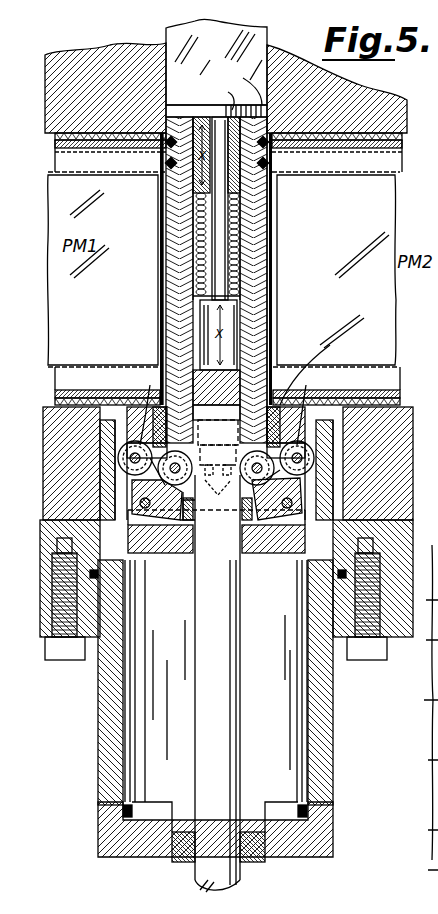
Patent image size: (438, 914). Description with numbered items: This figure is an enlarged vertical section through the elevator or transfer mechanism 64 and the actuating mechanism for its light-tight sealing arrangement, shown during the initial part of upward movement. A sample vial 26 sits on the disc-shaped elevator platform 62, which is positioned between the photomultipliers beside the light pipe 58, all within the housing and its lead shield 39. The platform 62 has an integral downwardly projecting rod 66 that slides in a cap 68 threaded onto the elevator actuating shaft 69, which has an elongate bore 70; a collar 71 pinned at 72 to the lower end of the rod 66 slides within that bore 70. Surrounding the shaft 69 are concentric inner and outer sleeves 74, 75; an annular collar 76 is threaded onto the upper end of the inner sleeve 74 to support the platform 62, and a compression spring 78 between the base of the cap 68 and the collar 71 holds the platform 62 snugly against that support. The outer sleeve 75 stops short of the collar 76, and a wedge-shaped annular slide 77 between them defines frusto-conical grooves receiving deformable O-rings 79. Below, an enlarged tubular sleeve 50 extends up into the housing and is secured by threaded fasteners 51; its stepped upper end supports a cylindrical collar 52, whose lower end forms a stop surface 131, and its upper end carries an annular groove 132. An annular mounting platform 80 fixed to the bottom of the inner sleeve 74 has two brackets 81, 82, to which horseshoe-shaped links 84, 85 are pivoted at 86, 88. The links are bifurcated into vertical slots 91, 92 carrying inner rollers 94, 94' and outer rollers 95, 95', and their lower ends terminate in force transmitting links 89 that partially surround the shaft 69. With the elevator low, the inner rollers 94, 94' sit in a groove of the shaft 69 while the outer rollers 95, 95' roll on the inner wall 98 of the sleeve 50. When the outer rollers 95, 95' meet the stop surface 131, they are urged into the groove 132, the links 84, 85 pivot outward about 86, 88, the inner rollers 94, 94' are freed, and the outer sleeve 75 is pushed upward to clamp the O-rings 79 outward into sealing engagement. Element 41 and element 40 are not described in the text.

The sample vial 26 is at (254, 42).
The lead shield 39 is at (383, 108).
The gasket 41 is at (402, 142).
The wedge-shaped annular slide 77 is at (303, 160).
The light pipe 58 is at (272, 218).
The outer roller 95 is at (107, 386).
The outer roller 95' is at (336, 386).
The slot 91 is at (140, 406).
The slot 92 is at (298, 405).
The collar 52 is at (340, 362).
The lower housing 40 is at (404, 405).
The outer sleeve 75 is at (262, 300).
The inner sleeve 74 is at (250, 272).
The cap 68 is at (198, 190).
The pin 72 is at (205, 290).
The collar 71 is at (200, 296).
The downwardly projecting rod 66 is at (215, 120).
The elevator platform 62 is at (219, 97).
The annular collar 76 is at (239, 84).
The O-rings 79 is at (165, 163).
The compression spring 78 is at (238, 268).
The elongate bore 70 is at (230, 332).
The elevator actuating shaft 69 is at (225, 395).
The inner roller 94 is at (218, 457).
The inner roller 94' is at (216, 418).
The annular groove 132 is at (312, 458).
The stop surface 131 is at (305, 445).
The horseshoe-shaped link 85 is at (300, 475).
The horseshoe-shaped link 84 is at (158, 525).
The pivot 86 is at (147, 510).
The bracket 81 is at (145, 540).
The bracket 82 is at (268, 538).
The pivot 88 is at (284, 525).
The annular mounting platform 80 is at (285, 530).
The force transmitting links 89 is at (217, 519).
The elevator mechanism 64 is at (181, 886).
The tubular sleeve 50 is at (328, 780).
The inner wall 98 is at (300, 750).
The threaded fasteners 51 is at (365, 660).